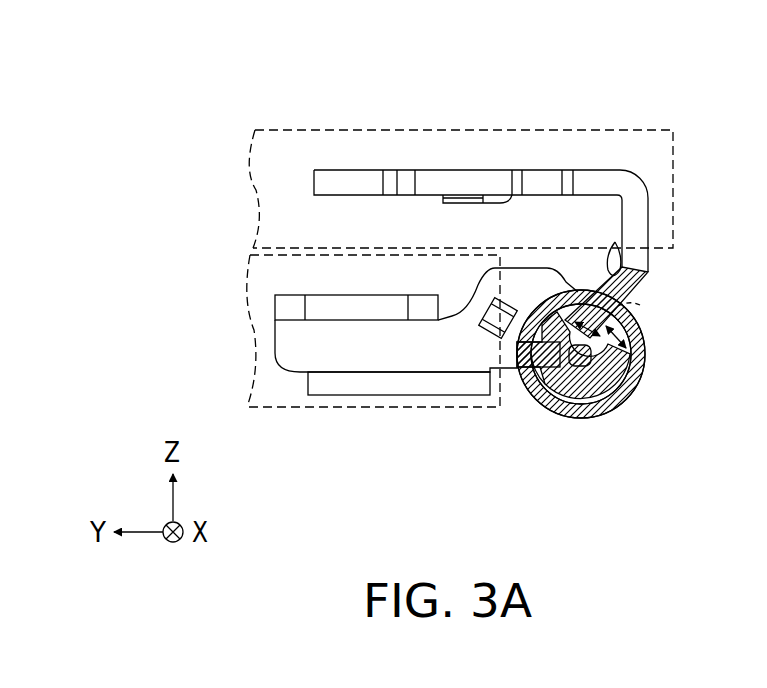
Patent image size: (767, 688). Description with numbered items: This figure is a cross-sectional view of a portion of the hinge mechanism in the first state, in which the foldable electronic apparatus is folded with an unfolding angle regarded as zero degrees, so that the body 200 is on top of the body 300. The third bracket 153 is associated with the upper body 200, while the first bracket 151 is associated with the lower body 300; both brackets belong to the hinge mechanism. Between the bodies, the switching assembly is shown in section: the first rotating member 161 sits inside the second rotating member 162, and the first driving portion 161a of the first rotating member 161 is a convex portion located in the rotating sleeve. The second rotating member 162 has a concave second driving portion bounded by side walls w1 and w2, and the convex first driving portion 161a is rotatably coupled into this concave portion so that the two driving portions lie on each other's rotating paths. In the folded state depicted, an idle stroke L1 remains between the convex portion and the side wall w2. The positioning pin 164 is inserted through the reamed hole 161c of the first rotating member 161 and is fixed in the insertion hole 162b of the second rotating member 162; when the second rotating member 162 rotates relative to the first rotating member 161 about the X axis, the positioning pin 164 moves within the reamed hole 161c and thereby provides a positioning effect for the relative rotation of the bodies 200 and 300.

The body 200 is at (472, 130).
The third bracket 153 is at (357, 183).
The body 300 is at (360, 407).
The first bracket 151 is at (330, 312).
The second rotating member 162 is at (625, 400).
The insertion hole 162b is at (575, 405).
The first rotating member 161 is at (641, 350).
The first driving portion 161a is at (566, 316).
The reamed hole 161c is at (528, 386).
The positioning pin 164 is at (517, 350).
The side wall w1 is at (540, 318).
The side wall w2 is at (632, 368).
The idle stroke L1 is at (640, 305).